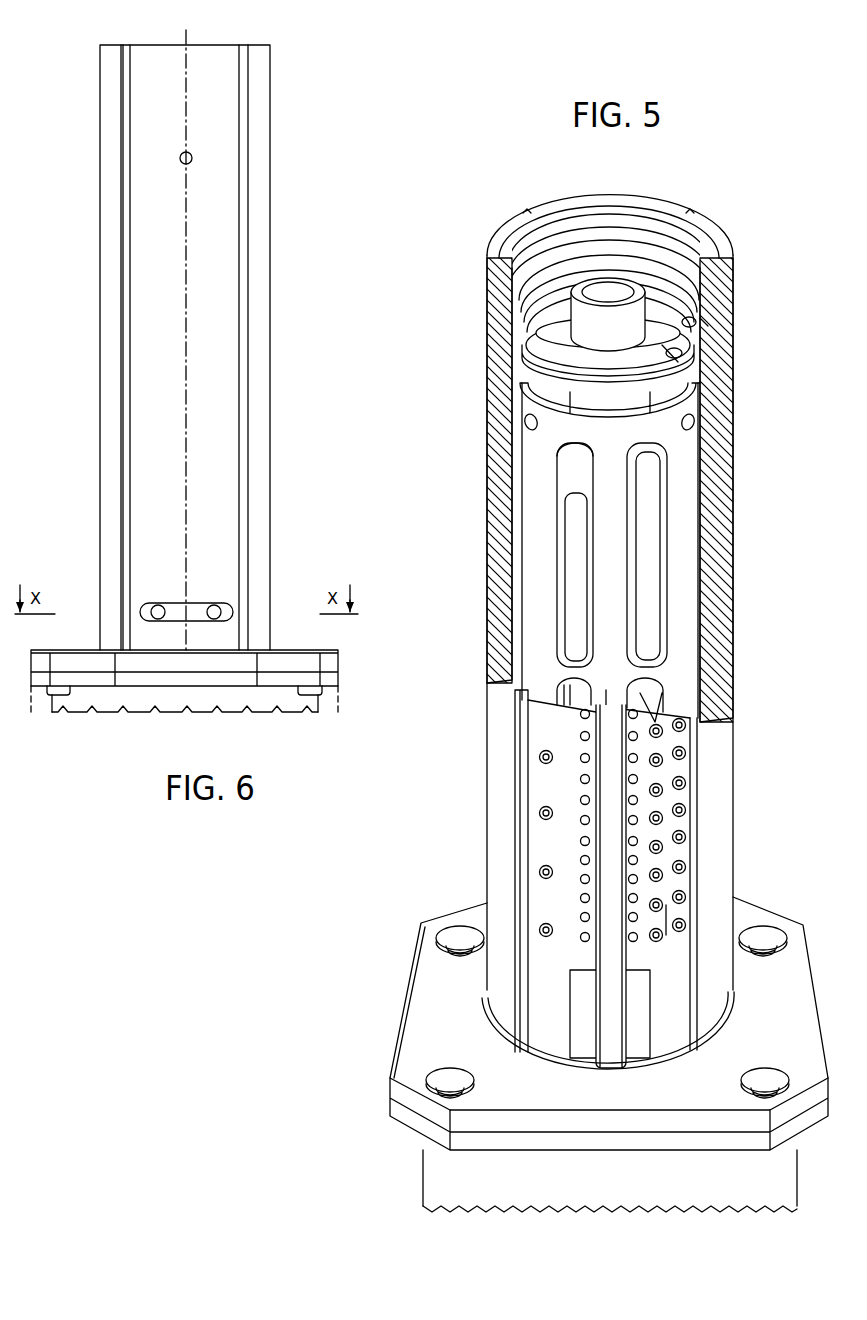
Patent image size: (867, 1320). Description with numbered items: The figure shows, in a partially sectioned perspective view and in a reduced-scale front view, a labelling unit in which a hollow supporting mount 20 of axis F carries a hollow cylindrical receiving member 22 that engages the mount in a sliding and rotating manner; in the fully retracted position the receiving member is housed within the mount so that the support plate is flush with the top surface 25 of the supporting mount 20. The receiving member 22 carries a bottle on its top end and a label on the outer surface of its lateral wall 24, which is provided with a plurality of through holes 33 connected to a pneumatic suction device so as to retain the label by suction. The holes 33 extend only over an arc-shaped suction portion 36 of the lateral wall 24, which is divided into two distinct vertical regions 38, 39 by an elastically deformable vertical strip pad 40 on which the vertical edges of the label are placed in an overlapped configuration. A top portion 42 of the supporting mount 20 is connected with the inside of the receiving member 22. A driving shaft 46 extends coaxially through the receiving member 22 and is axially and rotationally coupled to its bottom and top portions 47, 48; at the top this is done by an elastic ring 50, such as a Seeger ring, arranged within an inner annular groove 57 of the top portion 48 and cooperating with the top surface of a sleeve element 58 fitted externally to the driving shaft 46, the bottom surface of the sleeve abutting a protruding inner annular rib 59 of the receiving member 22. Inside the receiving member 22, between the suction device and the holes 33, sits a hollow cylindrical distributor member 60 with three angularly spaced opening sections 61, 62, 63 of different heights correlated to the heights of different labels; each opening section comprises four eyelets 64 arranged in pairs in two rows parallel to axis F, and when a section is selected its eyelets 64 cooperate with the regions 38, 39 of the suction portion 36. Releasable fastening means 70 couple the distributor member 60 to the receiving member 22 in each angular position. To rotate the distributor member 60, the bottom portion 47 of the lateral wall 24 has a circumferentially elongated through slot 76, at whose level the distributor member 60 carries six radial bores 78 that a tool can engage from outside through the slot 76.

In FIG. 6, the supporting mount 20 is at (143, 700).
In FIG. 5, the supporting mount 20 is at (448, 1172).
In FIG. 6, the receiving member 22 is at (102, 175).
In FIG. 5, the receiving member 22 is at (510, 826).
In FIG. 6, the lateral wall 24 is at (260, 378).
In FIG. 5, the lateral wall 24 is at (712, 652).
In FIG. 6, the top surface 25 is at (70, 646).
In FIG. 5, the top surface 25 is at (450, 998).
In FIG. 5, the through holes 33 is at (542, 753).
In FIG. 5, the suction portion 36 is at (614, 708).
In FIG. 5, the vertical region 38 is at (556, 832).
In FIG. 5, the vertical region 39 is at (672, 917).
In FIG. 5, the vertical strip pad 40 is at (615, 1048).
In FIG. 6, the top portion 42 is at (66, 705).
In FIG. 5, the top portion 42 is at (745, 1176).
In FIG. 5, the driving shaft 46 is at (630, 403).
In FIG. 6, the bottom portion 47 is at (232, 589).
In FIG. 5, the bottom portion 47 is at (668, 1016).
In FIG. 6, the top portion 48 is at (237, 142).
In FIG. 5, the top portion 48 is at (706, 322).
In FIG. 5, the elastic ring 50 is at (655, 305).
In FIG. 5, the inner annular groove 57 is at (700, 340).
In FIG. 5, the sleeve element 58 is at (557, 322).
In FIG. 5, the inner annular rib 59 is at (690, 370).
In FIG. 5, the distributor member 60 is at (680, 545).
In FIG. 5, the opening section 61 is at (566, 557).
In FIG. 5, the opening section 62 is at (645, 512).
In FIG. 5, the opening section 63 is at (576, 470).
In FIG. 5, the eyelets 64 is at (588, 601).
In FIG. 5, the releasable fastening means 70 is at (698, 433).
In FIG. 6, the through slot 76 is at (178, 606).
In FIG. 6, the radial bores 78 is at (153, 607).